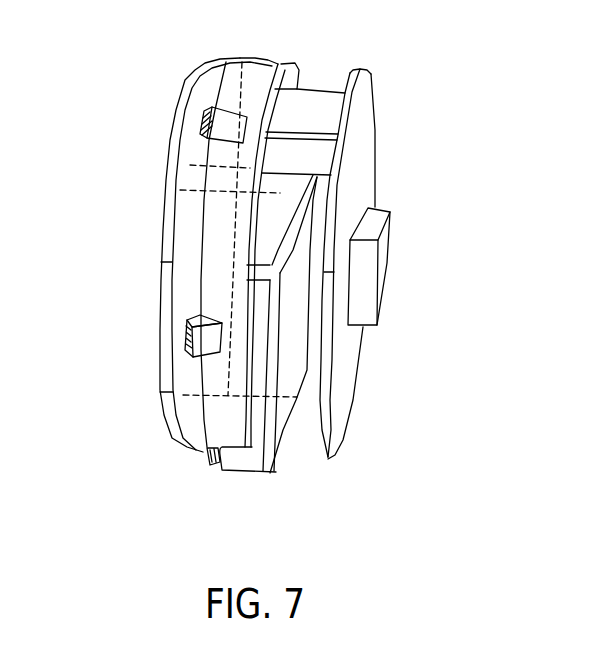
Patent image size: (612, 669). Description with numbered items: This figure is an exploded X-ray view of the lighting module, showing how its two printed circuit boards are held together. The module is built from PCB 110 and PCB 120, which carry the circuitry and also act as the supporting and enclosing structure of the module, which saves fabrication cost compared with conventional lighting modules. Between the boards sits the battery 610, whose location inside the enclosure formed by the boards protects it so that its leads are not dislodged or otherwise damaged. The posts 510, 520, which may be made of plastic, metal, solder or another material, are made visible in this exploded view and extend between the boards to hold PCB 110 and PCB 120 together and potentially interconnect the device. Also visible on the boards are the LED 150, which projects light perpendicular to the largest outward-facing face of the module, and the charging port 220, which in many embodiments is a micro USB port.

The PCB 110 is at (368, 130).
The PCB 120 is at (185, 143).
The LED 150 is at (382, 262).
The charging port 220 is at (323, 103).
The post 510 is at (223, 173).
The post 520 is at (232, 385).
The battery 610 is at (249, 458).